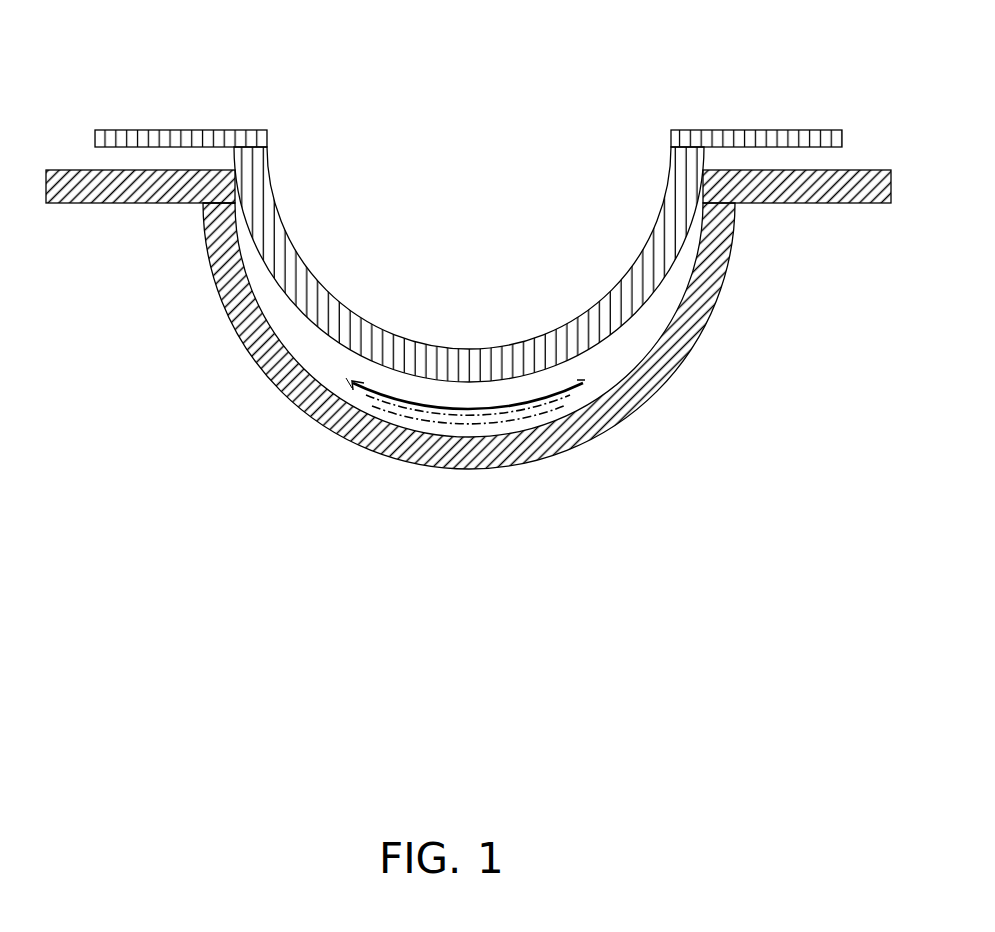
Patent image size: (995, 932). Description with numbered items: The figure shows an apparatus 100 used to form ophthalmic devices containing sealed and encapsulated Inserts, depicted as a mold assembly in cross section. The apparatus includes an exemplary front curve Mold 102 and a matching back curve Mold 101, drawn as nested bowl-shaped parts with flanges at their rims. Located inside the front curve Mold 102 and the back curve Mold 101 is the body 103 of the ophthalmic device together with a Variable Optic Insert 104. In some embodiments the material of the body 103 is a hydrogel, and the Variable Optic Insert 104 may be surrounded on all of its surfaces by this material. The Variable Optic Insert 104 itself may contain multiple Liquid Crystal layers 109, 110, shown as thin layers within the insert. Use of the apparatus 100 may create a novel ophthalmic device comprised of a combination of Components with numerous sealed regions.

The apparatus 100 is at (403, 170).
The back curve Mold 101 is at (658, 236).
The front curve Mold 102 is at (318, 410).
The body 103 is at (517, 375).
The Variable Optic Insert 104 is at (347, 375).
The Liquid Crystal layer 109 is at (402, 416).
The Liquid Crystal layer 110 is at (510, 422).